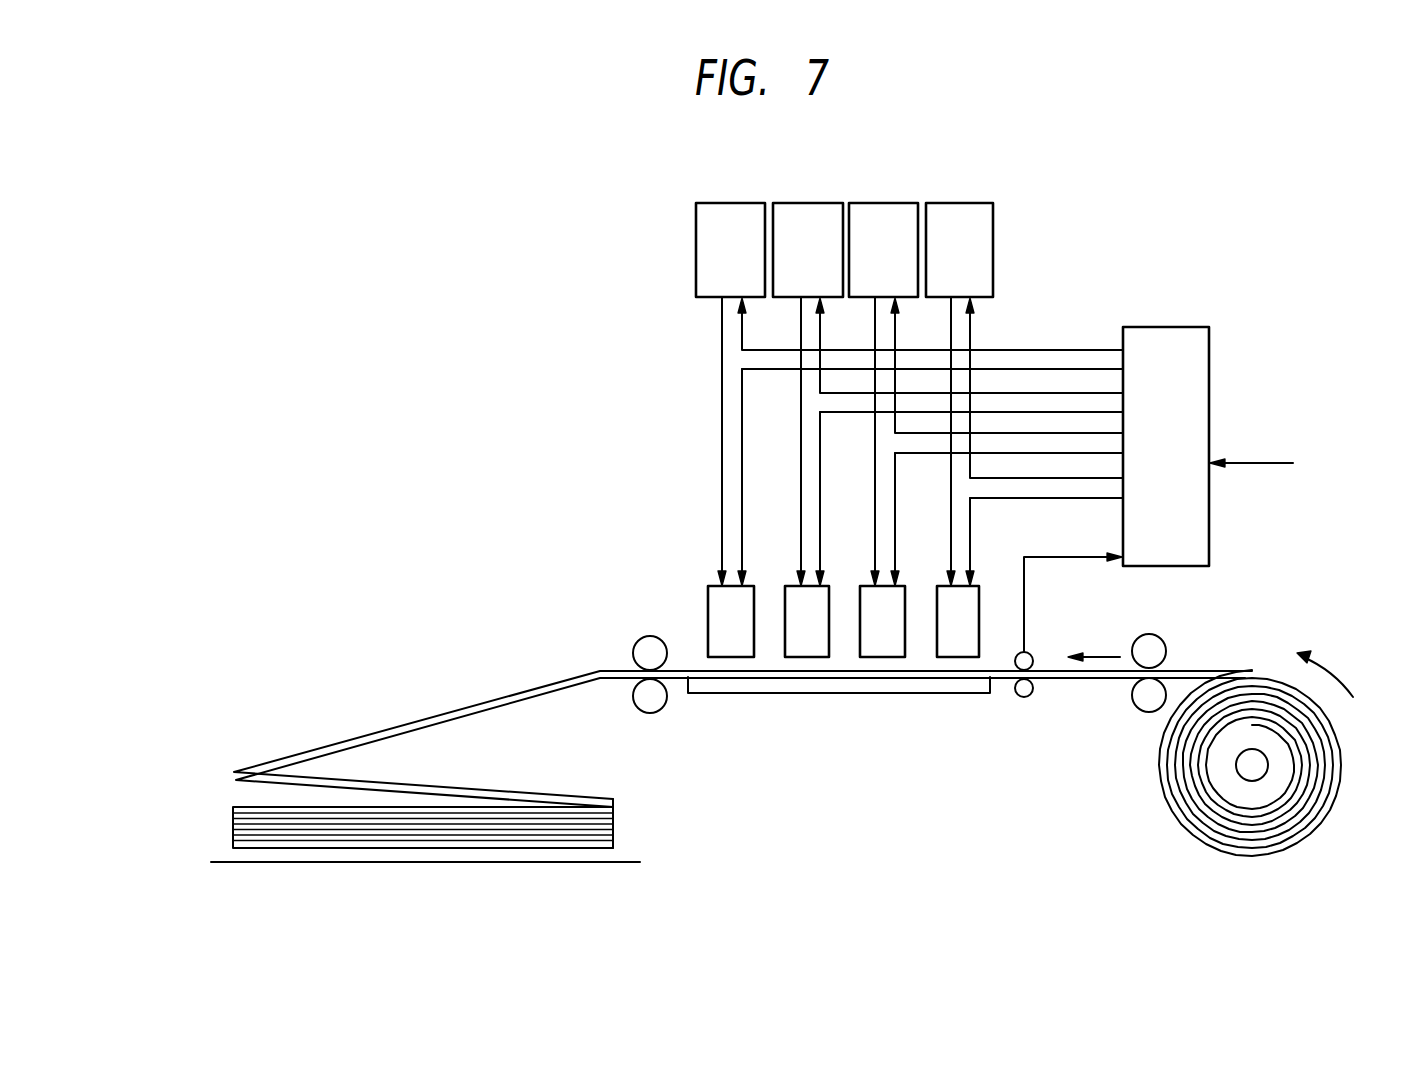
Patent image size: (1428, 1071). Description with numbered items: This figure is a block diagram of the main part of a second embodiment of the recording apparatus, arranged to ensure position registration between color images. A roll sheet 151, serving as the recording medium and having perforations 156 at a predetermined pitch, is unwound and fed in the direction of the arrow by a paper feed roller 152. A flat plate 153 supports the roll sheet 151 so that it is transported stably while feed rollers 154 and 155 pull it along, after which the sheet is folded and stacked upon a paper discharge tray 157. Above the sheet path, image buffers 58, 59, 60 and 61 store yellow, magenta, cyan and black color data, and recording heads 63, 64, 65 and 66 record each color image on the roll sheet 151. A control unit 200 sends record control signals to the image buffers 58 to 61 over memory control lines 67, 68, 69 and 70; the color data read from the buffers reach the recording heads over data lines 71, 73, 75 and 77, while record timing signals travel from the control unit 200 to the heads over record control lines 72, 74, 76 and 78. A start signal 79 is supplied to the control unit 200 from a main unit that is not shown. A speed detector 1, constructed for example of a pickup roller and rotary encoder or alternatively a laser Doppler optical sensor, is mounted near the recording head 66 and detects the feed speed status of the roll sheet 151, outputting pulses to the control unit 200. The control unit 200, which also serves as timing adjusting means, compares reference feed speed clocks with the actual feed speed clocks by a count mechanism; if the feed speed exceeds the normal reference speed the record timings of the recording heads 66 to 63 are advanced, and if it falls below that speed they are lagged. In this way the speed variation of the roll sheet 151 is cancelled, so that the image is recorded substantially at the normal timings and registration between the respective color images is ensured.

The speed detector 1 is at (1068, 625).
The image buffer 58 is at (730, 223).
The image buffer 59 is at (808, 223).
The image buffer 60 is at (883, 223).
The image buffer 61 is at (959, 223).
The recording head 63 is at (744, 590).
The recording head 64 is at (822, 590).
The recording head 65 is at (897, 590).
The recording head 66 is at (973, 603).
The memory control line 67 is at (930, 324).
The memory control line 68 is at (969, 341).
The memory control line 69 is at (1007, 359).
The memory control line 70 is at (1044, 422).
The data line 71 is at (684, 441).
The record control line 72 is at (696, 407).
The data line 73 is at (801, 403).
The record control line 74 is at (785, 456).
The data line 75 is at (852, 441).
The record control line 76 is at (860, 496).
The data line 77 is at (930, 441).
The record control line 78 is at (995, 529).
The start signal 79 is at (1251, 439).
The roll sheet 151 is at (1212, 753).
The paper feed roller 152 is at (1158, 652).
The flat plate 153 is at (839, 719).
The feed roller 154 is at (645, 616).
The feed roller 155 is at (653, 725).
The perforations 156 is at (782, 708).
The paper discharge tray 157 is at (425, 863).
The control unit 200 is at (1171, 414).